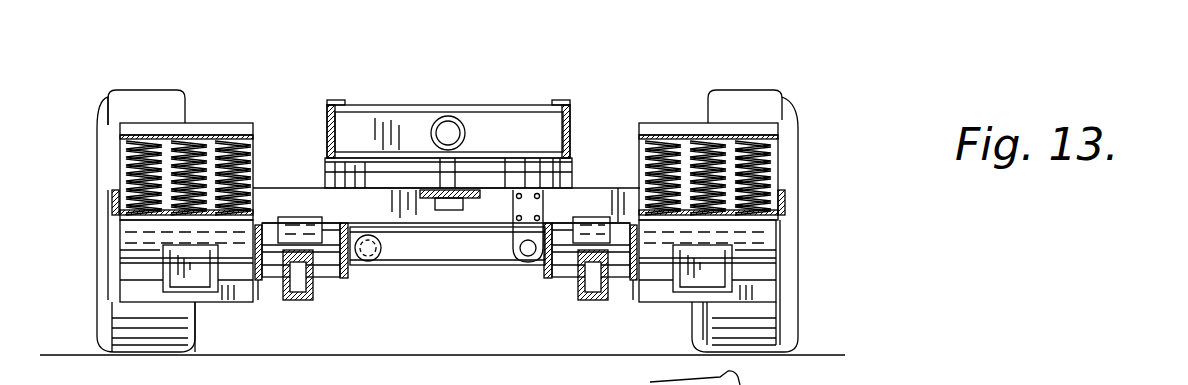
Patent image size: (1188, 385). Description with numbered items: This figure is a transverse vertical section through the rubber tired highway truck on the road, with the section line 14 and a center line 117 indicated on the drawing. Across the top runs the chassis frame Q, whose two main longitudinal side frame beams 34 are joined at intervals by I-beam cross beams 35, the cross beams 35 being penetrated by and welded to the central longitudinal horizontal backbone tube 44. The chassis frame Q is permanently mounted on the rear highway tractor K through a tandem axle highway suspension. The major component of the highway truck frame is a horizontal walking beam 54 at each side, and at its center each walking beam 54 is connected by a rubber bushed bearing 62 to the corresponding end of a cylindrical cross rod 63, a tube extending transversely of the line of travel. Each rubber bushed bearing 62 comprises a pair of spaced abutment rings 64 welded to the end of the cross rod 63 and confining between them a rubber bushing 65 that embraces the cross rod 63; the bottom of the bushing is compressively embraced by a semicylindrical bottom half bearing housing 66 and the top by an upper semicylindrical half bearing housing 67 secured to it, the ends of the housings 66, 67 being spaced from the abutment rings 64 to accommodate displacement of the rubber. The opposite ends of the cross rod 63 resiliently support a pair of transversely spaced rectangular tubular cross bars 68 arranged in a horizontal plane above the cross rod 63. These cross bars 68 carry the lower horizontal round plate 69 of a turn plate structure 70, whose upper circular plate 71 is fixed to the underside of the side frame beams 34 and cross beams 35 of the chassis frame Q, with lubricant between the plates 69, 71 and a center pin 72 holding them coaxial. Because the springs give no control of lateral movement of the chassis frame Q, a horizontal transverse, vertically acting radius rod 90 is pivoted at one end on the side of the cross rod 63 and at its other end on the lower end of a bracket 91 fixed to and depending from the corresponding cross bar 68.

The section line 14 is at (193, 100).
The center line 117 is at (190, 357).
The rear highway tractor K is at (806, 145).
The chassis frame Q is at (522, 97).
The cross beams 35 is at (410, 125).
The main longitudinal side frame beams 34 is at (336, 102).
The backbone tube 44 is at (455, 118).
The lower horizontal round plate 69 is at (538, 180).
The upper circular plate 71 is at (360, 172).
The turn plate structure 70 is at (510, 160).
The center pin 72 is at (470, 200).
The cross bars 68 is at (628, 190).
The rubber bushed bearing 62 is at (295, 215).
The abutment rings 64 is at (255, 265).
The bottom half bearing housing 66 is at (340, 232).
The upper half bearing housing 67 is at (328, 242).
The walking beam 54 is at (305, 302).
The rubber bushing 65 is at (258, 280).
The radius rod 90 is at (420, 256).
The cross rod 63 is at (412, 266).
The bracket 91 is at (512, 240).